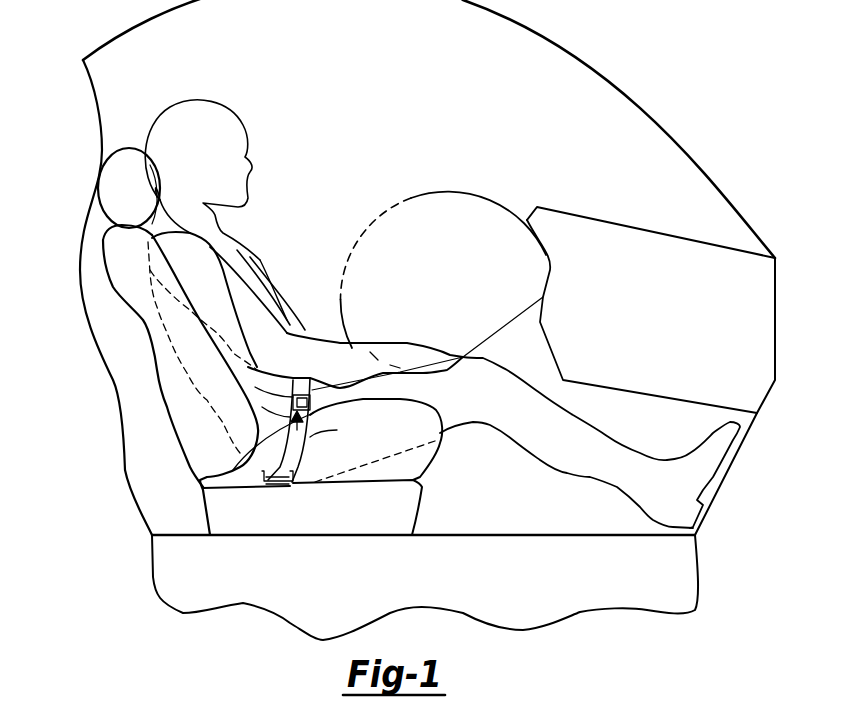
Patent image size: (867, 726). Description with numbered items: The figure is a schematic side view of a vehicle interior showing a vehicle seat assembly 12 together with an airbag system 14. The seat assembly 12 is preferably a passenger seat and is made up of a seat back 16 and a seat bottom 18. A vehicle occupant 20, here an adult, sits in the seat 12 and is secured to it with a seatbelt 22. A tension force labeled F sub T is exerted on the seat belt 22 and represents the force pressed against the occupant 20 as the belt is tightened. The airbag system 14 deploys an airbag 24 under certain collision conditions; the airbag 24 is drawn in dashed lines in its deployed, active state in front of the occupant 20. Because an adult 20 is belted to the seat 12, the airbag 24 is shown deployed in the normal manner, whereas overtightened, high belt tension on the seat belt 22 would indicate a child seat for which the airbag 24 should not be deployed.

The vehicle seat assembly 12 is at (103, 413).
The airbag system 14 is at (487, 186).
The seat back 16 is at (197, 417).
The seat bottom 18 is at (302, 517).
The vehicle occupant 20 is at (213, 127).
The seatbelt 22 is at (280, 295).
The airbag 24 is at (417, 217).